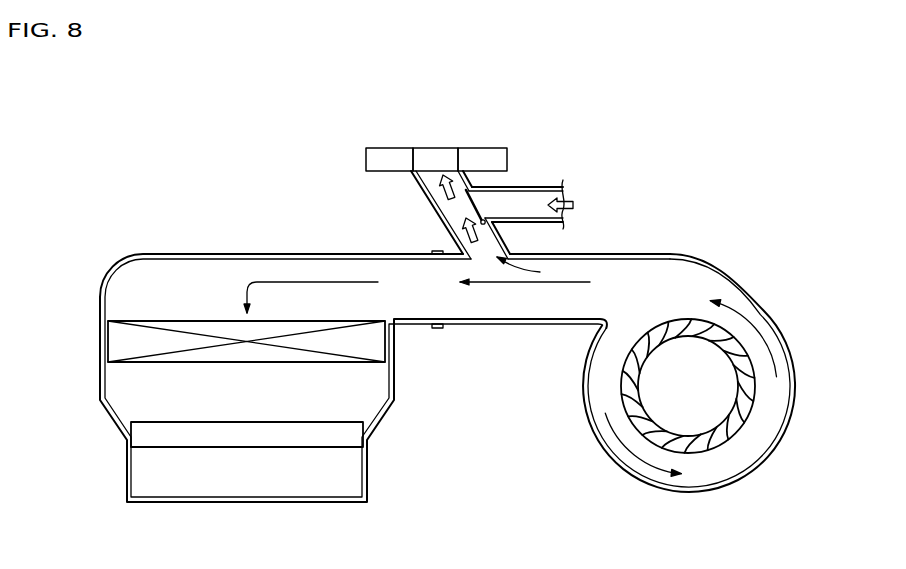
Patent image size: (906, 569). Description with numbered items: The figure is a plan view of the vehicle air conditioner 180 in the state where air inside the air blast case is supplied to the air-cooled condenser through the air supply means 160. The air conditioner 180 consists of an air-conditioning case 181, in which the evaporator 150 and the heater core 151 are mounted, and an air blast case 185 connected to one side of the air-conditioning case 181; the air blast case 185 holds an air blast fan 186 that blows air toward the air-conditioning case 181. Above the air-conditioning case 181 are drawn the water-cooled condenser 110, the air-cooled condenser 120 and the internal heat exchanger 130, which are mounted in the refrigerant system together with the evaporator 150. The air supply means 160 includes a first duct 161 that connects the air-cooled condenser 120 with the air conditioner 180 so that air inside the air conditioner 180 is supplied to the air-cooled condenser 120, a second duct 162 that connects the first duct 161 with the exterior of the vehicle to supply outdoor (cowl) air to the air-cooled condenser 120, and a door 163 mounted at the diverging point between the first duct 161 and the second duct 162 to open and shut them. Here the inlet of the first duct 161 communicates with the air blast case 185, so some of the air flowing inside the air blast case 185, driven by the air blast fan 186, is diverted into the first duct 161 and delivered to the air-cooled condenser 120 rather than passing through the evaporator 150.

The water-cooled condenser 110 is at (387, 155).
The air-cooled condenser 120 is at (437, 155).
The internal heat exchanger 130 is at (493, 155).
The evaporator 150 is at (122, 339).
The heater core 151 is at (147, 435).
The air supply means 160 is at (518, 171).
The first duct 161 is at (505, 248).
The second duct 162 is at (550, 186).
The door 163 is at (468, 208).
The air conditioner 180 is at (155, 232).
The air-conditioning case 181 is at (115, 268).
The air blast case 185 is at (720, 262).
The air blast fan 186 is at (707, 448).